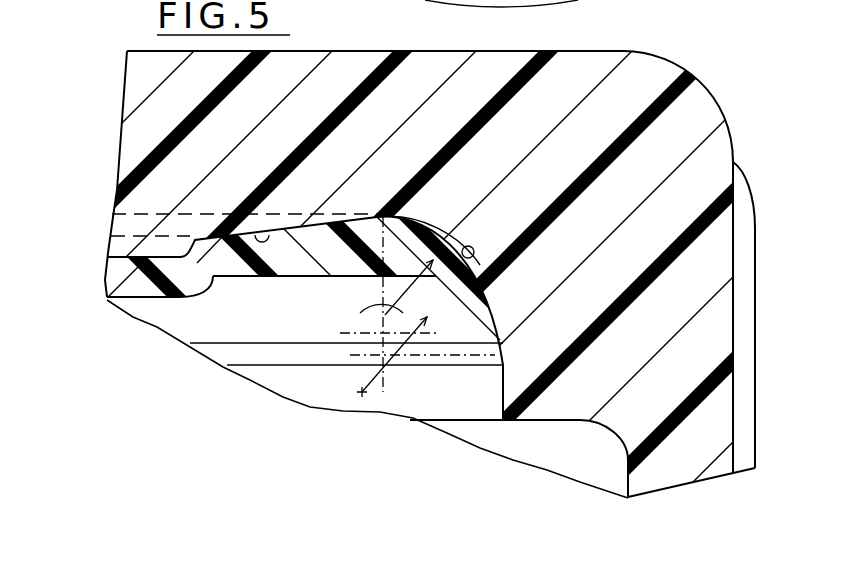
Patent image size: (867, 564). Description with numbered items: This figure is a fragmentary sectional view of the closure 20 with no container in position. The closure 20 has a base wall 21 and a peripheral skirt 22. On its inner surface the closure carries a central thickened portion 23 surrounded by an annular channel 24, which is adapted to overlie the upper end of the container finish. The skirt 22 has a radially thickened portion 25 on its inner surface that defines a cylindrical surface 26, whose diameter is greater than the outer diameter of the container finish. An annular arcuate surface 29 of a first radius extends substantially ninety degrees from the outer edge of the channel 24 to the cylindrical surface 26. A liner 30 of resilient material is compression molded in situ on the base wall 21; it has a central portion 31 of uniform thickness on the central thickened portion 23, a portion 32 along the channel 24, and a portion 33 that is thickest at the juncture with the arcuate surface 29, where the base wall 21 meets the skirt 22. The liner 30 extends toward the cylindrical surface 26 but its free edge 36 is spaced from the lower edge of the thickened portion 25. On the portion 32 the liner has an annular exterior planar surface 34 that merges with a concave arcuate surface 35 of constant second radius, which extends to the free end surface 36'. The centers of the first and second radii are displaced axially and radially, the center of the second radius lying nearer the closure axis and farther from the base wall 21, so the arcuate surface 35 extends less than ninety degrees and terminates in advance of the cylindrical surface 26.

The closure 20 is at (597, 42).
The base wall 21 is at (358, 60).
The peripheral skirt 22 is at (710, 440).
The central thickened portion 23 is at (155, 190).
The annular channel 24 is at (243, 232).
The radially thickened portion 25 is at (590, 378).
The cylindrical surface 26 is at (497, 408).
The annular arcuate surface 29 is at (472, 248).
The liner 30 is at (244, 262).
The central portion 31 is at (128, 276).
The portion along channel 32 is at (307, 237).
The thicker portion 33 is at (428, 242).
The annular exterior planar surface 34 is at (210, 282).
The arcuate surface 35 is at (373, 280).
The free edge 36 is at (440, 318).
The free end surface 36' is at (417, 347).